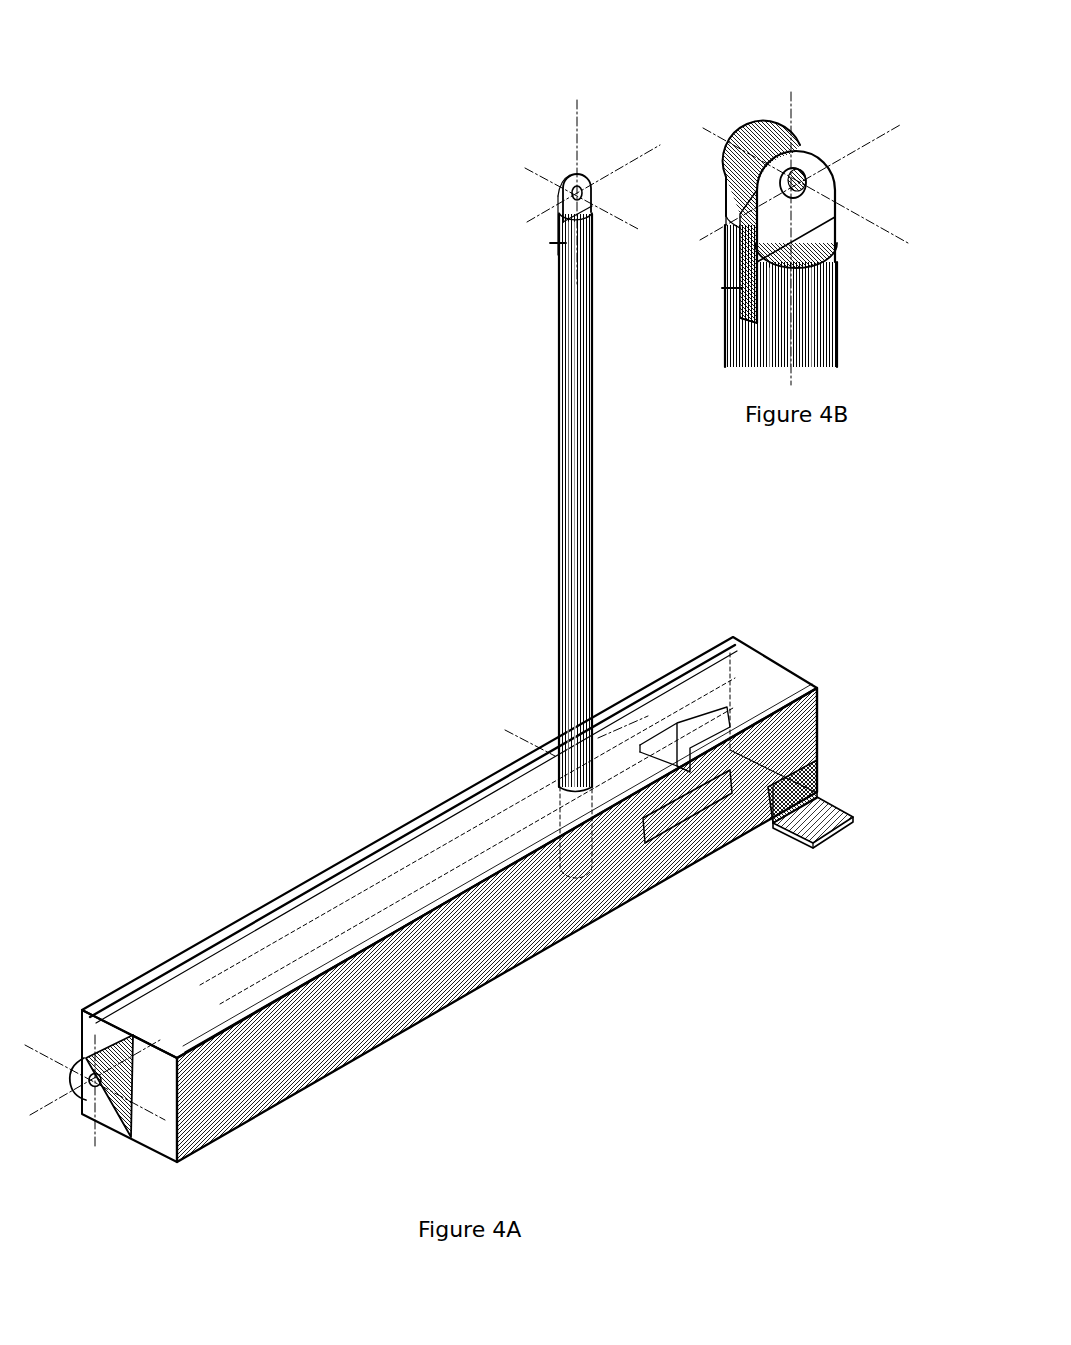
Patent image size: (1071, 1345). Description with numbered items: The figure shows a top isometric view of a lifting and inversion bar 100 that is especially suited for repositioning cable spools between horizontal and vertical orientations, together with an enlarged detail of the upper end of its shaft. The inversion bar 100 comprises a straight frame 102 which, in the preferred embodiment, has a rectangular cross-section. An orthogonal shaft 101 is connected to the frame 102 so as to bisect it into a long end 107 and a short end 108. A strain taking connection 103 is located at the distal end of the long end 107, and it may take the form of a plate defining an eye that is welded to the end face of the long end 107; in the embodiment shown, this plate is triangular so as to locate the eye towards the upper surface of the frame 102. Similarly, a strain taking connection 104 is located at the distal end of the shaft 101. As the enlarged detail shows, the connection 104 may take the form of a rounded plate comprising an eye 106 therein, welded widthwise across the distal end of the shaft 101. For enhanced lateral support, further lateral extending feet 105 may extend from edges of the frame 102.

In FIG. 4A, the lifting and inversion bar 100 is at (152, 323).
In FIG. 4A, the orthogonal shaft 101 is at (592, 398).
In FIG. 4A, the straight frame 102 is at (336, 870).
In FIG. 4A, the strain taking connection 103 is at (82, 1060).
In FIG. 4A, the strain taking connection 104 is at (575, 186).
In FIG. 4B, the strain taking connection 104 is at (860, 80).
In FIG. 4A, the lateral extending feet 105 is at (840, 803).
In FIG. 4B, the eye 106 is at (802, 178).
In FIG. 4A, the long end 107 is at (176, 745).
In FIG. 4A, the short end 108 is at (678, 604).